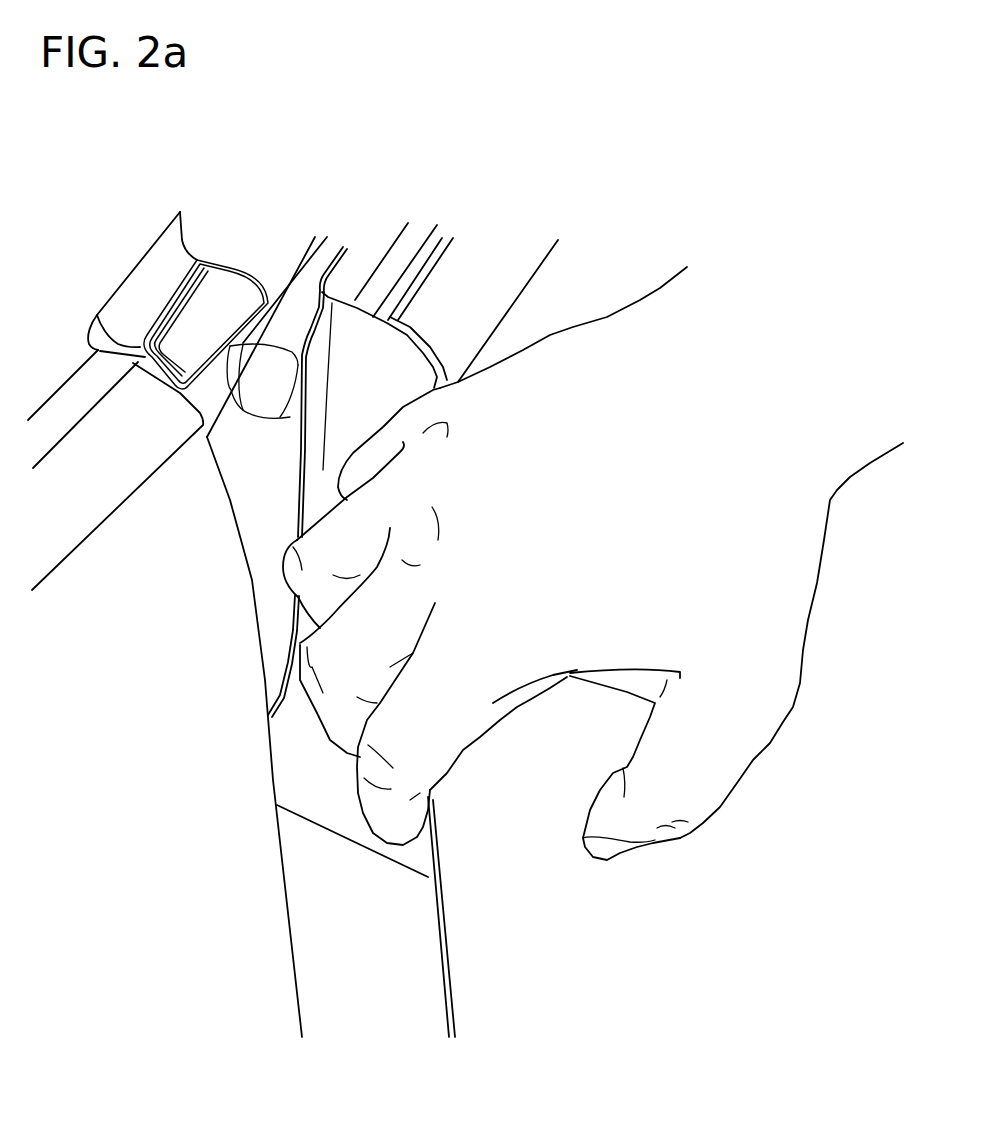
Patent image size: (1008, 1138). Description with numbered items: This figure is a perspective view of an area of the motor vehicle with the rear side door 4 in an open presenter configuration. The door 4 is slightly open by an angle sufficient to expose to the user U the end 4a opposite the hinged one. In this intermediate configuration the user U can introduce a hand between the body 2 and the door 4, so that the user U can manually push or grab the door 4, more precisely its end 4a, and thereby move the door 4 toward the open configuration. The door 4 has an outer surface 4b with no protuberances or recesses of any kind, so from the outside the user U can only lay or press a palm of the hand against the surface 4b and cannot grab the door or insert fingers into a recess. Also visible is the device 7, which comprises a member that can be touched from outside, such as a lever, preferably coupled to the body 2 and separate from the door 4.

The body 2 is at (80, 395).
The device 7 is at (229, 285).
The rear side door 4 is at (465, 890).
The end 4a is at (358, 857).
The outer surface 4b is at (512, 758).
The user U is at (640, 317).